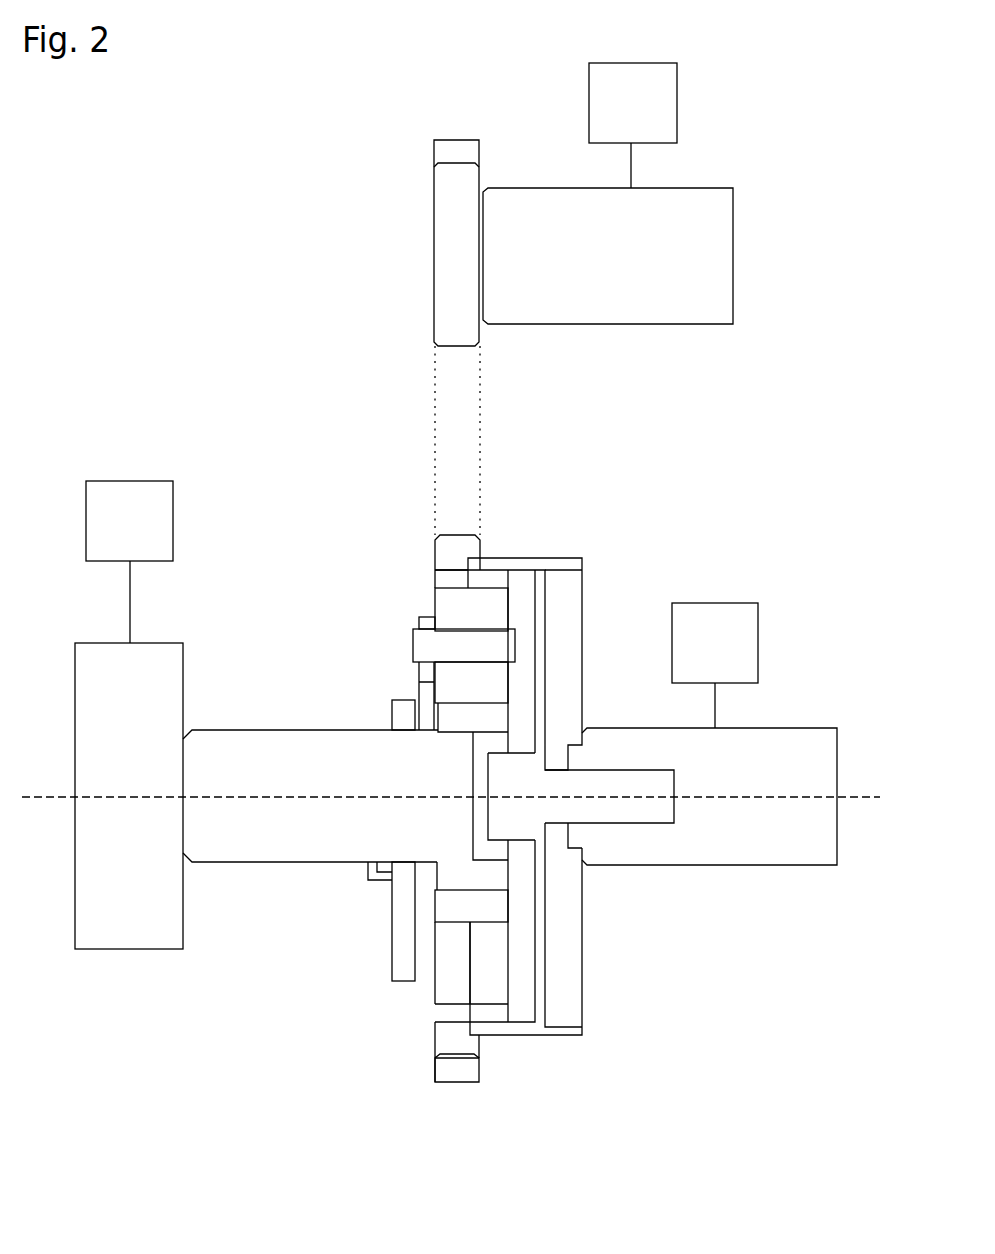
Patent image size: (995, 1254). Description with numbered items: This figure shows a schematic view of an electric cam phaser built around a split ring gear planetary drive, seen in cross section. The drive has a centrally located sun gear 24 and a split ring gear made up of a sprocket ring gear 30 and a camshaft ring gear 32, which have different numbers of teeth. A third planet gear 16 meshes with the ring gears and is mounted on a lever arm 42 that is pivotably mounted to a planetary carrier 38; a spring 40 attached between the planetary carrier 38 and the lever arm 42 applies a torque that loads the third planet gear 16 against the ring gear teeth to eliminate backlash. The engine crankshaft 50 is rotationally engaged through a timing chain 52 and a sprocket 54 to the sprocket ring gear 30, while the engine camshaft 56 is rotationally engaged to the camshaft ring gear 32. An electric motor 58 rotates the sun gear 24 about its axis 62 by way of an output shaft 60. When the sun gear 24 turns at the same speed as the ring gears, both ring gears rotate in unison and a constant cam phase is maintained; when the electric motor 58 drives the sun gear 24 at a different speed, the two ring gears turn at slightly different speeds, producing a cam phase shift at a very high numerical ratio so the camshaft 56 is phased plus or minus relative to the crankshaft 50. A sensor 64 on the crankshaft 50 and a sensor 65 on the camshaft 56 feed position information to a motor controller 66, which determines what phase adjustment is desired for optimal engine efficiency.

The third planet gear 16 is at (488, 624).
The sun gear 24 is at (471, 731).
The sprocket ring gear 30 is at (464, 976).
The camshaft ring gear 32 is at (488, 582).
The planetary carrier 38 is at (398, 715).
The spring 40 is at (369, 879).
The lever arm 42 is at (424, 675).
The engine crankshaft 50 is at (618, 274).
The timing chain 52 is at (457, 150).
The sprocket 54 is at (454, 550).
The engine camshaft 56 is at (758, 847).
The electric motor 58 is at (142, 746).
The output shaft 60 is at (316, 774).
The axis 62 is at (455, 782).
The sensor 64 is at (644, 119).
The sensor 65 is at (726, 657).
The motor controller 66 is at (142, 536).